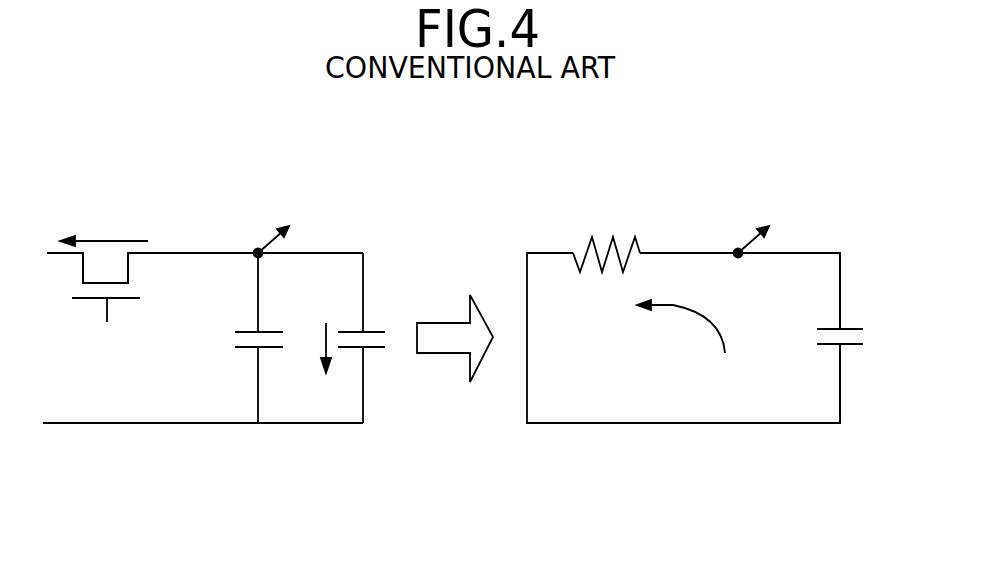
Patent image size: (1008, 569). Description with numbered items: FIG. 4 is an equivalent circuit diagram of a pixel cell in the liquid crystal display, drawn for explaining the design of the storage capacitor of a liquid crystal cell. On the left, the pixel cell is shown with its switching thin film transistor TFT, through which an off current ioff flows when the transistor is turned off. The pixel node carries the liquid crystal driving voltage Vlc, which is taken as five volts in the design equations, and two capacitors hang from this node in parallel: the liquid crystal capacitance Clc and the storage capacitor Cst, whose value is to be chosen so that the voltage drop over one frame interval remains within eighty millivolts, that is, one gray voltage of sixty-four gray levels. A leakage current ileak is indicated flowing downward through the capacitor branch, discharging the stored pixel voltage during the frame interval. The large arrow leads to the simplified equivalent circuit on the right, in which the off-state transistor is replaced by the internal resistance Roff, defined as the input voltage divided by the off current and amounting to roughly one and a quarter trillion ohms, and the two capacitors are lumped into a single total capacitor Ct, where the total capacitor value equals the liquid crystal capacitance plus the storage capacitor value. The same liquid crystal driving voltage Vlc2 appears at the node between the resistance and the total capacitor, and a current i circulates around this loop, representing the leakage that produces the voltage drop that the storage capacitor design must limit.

The thin film transistor TFT is at (91, 310).
The off current ioff is at (104, 228).
The liquid crystal driving voltage Vlc is at (269, 231).
The liquid crystal capacitance Clc is at (246, 338).
The storage capacitor Cst is at (348, 338).
The leakage current ileak is at (308, 368).
The internal resistance Roff is at (606, 243).
The total capacitor value Ct is at (729, 338).
The liquid crystal driving voltage Vlc2 is at (751, 231).
The current i is at (681, 332).